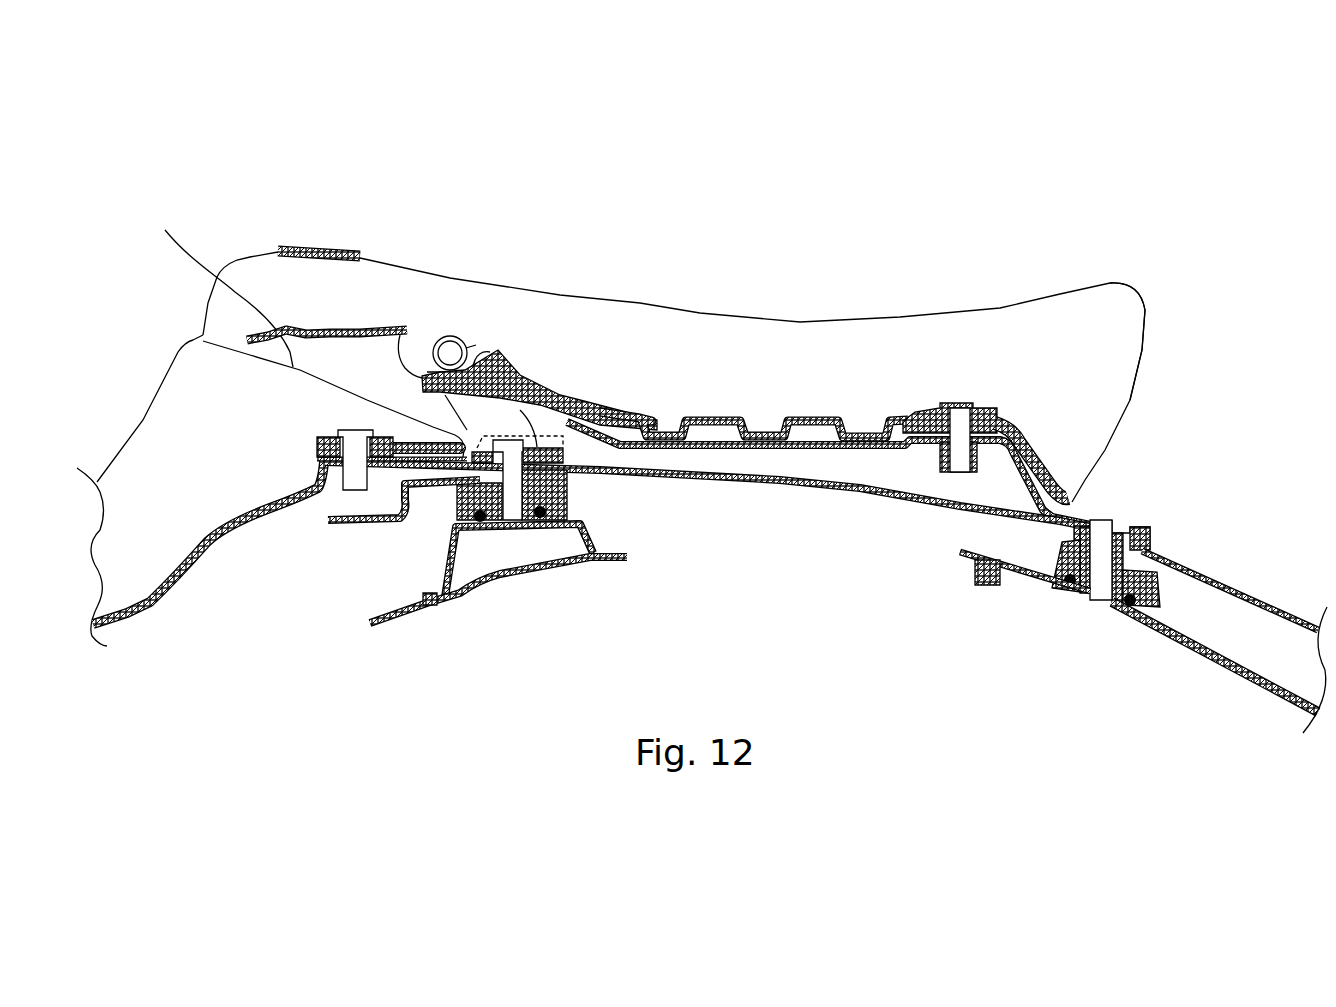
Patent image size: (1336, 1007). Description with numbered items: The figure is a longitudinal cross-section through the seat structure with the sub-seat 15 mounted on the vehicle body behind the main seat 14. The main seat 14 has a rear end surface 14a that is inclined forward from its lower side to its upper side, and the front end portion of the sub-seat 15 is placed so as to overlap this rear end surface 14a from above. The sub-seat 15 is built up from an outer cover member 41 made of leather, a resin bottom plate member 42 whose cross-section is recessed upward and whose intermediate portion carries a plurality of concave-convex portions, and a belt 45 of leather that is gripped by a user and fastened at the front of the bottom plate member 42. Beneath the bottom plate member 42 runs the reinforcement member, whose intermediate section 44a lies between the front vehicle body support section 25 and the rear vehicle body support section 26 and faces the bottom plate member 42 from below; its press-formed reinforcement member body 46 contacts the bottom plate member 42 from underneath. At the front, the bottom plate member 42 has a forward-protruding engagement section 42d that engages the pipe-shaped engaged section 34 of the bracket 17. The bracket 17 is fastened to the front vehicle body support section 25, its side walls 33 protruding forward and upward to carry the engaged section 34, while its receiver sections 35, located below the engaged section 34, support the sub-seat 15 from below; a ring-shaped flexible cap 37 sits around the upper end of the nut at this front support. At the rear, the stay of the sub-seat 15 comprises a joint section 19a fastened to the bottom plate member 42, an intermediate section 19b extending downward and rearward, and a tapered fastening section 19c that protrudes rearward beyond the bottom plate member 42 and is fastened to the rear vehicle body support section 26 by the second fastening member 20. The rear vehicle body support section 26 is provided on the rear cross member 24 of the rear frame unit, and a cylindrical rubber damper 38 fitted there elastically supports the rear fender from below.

The main seat 14 is at (140, 420).
The rear end surface 14a is at (298, 331).
The sub-seat 15 is at (977, 307).
The bracket 17 is at (477, 341).
The joint section 19a is at (920, 440).
The intermediate section 19b is at (1103, 523).
The fastening section 19c is at (1148, 550).
The second fastening member 20 is at (1100, 600).
The rear cross member 24 is at (1233, 697).
The front vehicle body support section 25 is at (447, 537).
The rear vehicle body support section 26 is at (1072, 594).
The side walls 33 is at (527, 370).
The engaged section 34 is at (440, 335).
The receiver sections 35 is at (583, 450).
The cap 37 is at (1148, 552).
The rubber damper 38 is at (1165, 593).
The outer cover member 41 is at (1097, 282).
The bottom plate member 42 is at (807, 415).
The engagement section 42d is at (400, 327).
The intermediate section 44a is at (838, 455).
The belt 45 is at (303, 243).
The reinforcement member body 46 is at (765, 470).